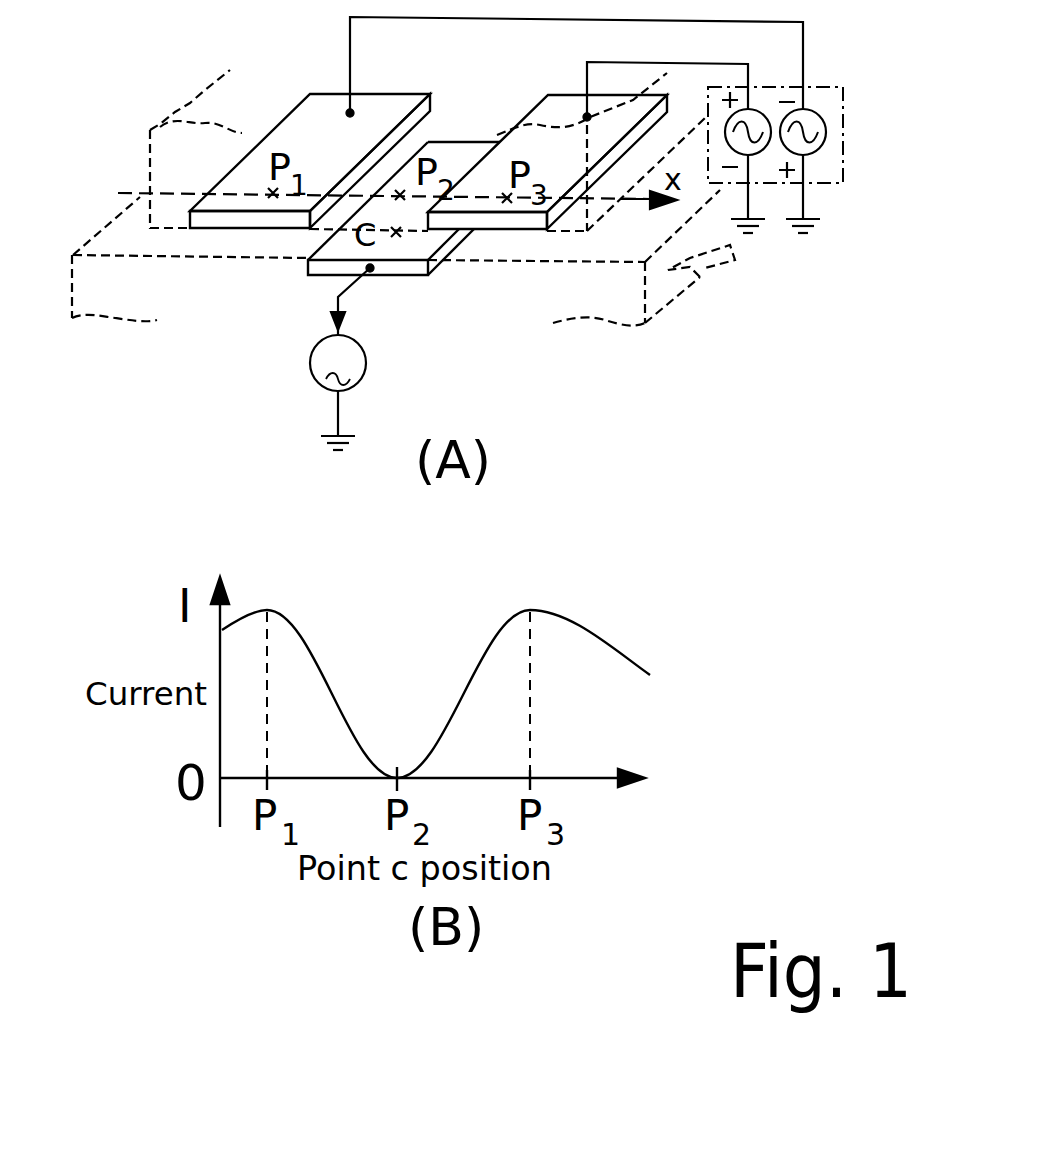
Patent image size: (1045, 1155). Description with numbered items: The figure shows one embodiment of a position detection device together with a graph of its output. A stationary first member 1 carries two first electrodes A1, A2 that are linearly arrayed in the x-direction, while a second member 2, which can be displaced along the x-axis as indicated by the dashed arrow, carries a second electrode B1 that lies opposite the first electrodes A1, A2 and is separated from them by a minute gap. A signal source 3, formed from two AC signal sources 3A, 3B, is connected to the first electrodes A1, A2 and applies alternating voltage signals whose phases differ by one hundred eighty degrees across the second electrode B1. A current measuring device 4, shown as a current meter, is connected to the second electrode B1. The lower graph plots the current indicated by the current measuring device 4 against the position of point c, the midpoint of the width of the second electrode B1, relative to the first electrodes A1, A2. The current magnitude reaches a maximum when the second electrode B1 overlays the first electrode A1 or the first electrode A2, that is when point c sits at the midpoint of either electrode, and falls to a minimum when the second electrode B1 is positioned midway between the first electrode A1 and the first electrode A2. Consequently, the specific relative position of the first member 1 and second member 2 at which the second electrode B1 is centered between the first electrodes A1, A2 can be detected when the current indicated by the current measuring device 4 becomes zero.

The first member 1 is at (157, 183).
The second member 2 is at (118, 233).
The signal source 3 is at (820, 157).
The AC signal source 3A is at (757, 152).
The AC signal source 3B is at (818, 150).
The current measuring device 4 is at (366, 381).
The first electrode A1 is at (333, 113).
The first electrode A2 is at (567, 117).
The second electrode B1 is at (443, 147).